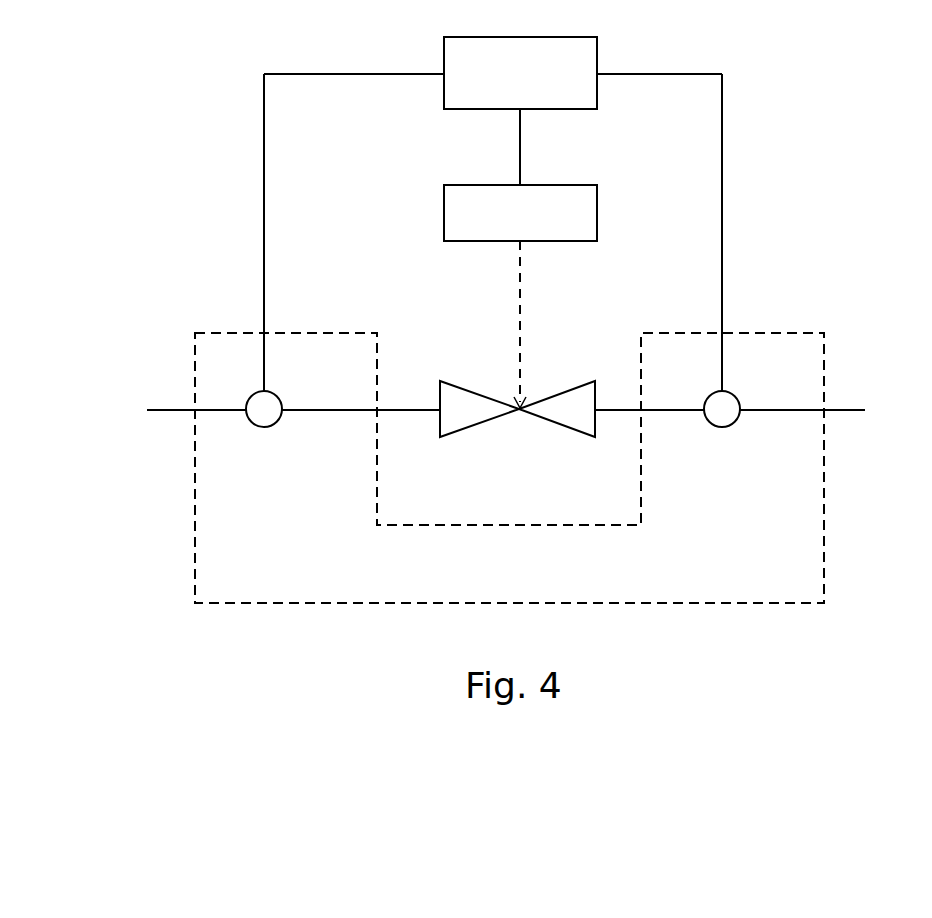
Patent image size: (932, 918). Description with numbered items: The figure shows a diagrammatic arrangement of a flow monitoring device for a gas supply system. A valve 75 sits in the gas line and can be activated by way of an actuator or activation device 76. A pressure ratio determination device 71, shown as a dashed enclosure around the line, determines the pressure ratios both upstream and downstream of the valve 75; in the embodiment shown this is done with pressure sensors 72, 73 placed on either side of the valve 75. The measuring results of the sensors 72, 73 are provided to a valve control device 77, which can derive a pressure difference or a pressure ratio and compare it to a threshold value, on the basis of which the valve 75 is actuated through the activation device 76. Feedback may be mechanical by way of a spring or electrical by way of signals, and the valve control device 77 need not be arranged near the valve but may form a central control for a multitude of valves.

The pressure ratio determination device 71 is at (824, 518).
The sensor 72 is at (271, 428).
The sensor 73 is at (728, 427).
The valve 75 is at (555, 431).
The activation device 76 is at (520, 258).
The valve control device 77 is at (493, 73).